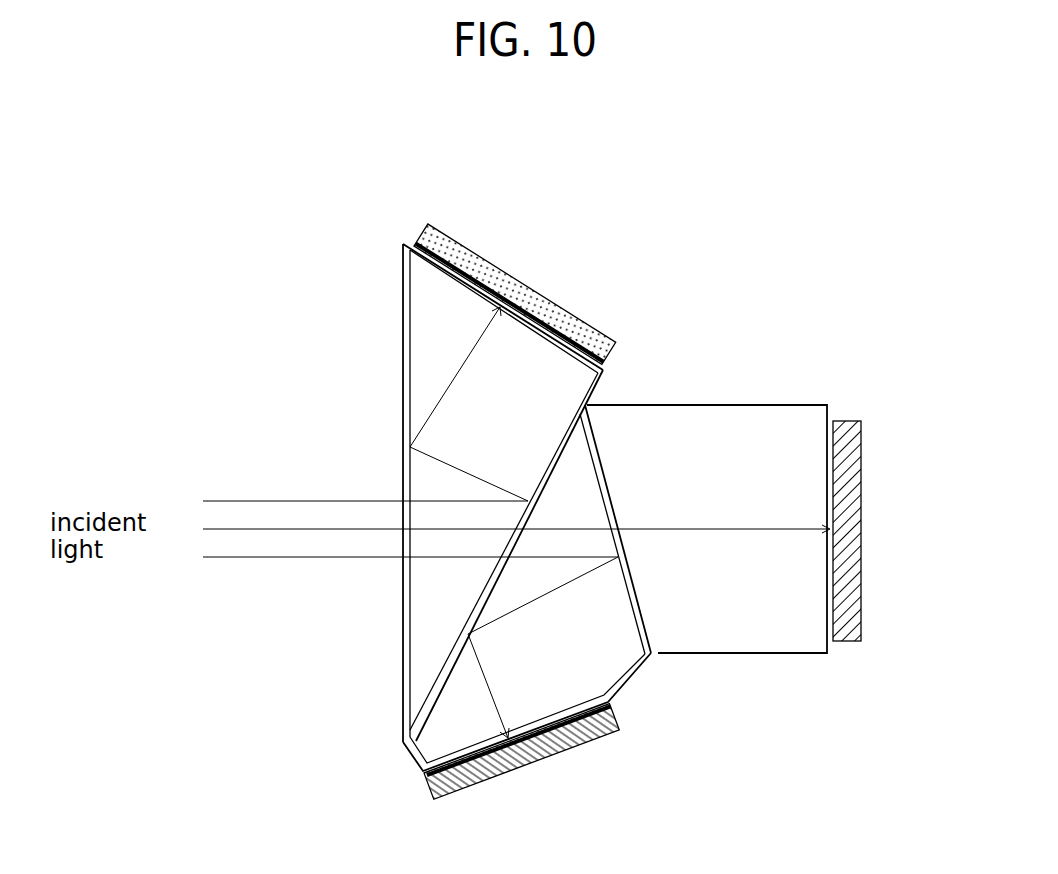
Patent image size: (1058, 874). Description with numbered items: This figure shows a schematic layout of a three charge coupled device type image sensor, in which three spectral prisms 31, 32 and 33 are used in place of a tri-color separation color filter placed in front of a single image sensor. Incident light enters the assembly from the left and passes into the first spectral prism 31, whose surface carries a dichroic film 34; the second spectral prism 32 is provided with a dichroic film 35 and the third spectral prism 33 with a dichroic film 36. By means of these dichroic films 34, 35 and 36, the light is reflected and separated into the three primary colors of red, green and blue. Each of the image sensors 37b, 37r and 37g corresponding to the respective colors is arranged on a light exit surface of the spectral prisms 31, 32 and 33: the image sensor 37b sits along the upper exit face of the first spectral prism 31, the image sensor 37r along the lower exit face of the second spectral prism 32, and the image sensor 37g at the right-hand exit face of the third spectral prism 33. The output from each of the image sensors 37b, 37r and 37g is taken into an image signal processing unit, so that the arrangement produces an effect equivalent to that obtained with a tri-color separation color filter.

The spectral prism 31 is at (423, 315).
The spectral prism 32 is at (610, 665).
The spectral prism 33 is at (708, 427).
The dichroic film 34 is at (402, 363).
The dichroic film 35 is at (428, 693).
The dichroic film 36 is at (645, 622).
The image sensor 37b is at (512, 270).
The image sensor 37g is at (848, 485).
The image sensor 37r is at (520, 765).